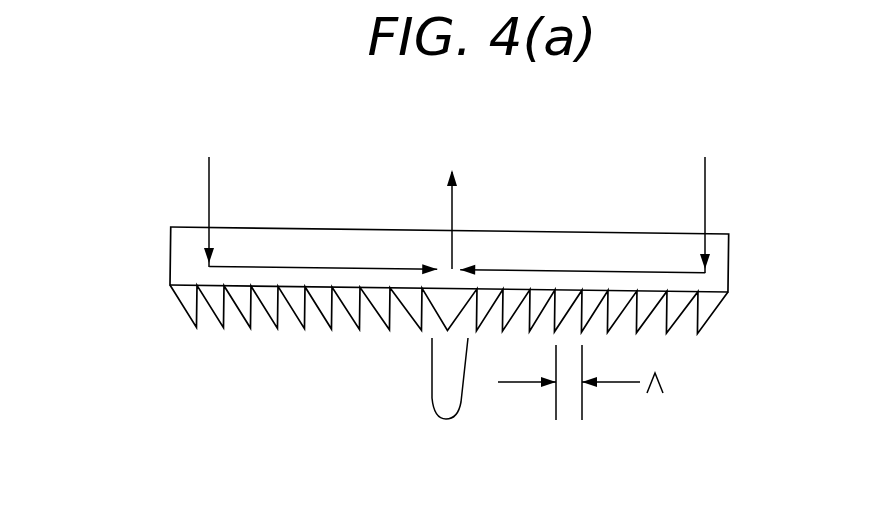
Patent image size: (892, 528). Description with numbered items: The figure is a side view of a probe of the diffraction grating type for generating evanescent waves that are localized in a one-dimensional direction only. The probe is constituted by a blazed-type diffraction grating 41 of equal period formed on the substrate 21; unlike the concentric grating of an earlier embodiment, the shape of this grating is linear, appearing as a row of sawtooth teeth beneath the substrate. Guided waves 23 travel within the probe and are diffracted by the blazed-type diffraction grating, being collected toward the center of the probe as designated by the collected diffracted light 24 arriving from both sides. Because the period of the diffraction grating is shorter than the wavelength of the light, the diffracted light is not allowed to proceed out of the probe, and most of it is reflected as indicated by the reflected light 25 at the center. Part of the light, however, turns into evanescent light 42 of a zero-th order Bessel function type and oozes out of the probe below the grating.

The substrate 21 is at (177, 248).
The guided wave 23 is at (457, 199).
The collected diffracted light 24 is at (457, 259).
The reflected light 25 is at (452, 202).
The blazed-type diffraction grating 41 is at (183, 295).
The evanescent light 42 is at (431, 378).